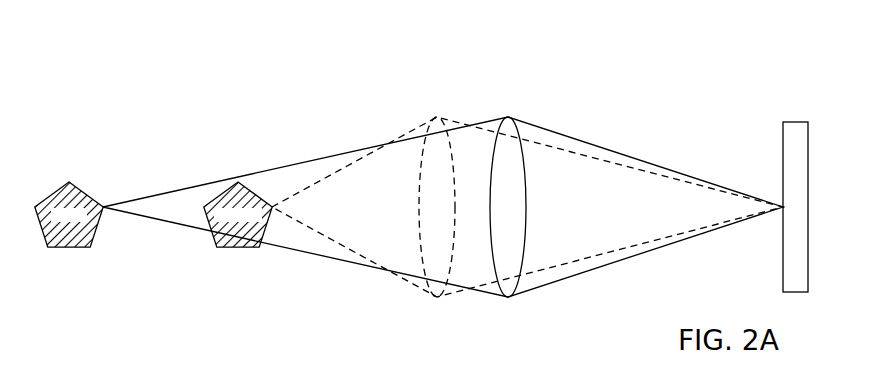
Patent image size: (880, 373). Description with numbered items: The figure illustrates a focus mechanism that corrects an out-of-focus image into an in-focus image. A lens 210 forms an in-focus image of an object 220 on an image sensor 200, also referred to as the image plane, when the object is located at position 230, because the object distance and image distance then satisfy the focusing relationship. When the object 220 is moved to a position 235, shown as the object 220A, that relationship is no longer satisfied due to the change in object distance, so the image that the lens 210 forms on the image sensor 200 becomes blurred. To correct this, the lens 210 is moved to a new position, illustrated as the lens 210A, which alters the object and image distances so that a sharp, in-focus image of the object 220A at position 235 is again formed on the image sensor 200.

The image sensor 200 is at (783, 142).
The lens 210 is at (493, 137).
The lens at new position 210A is at (418, 137).
The object 220 is at (409, 207).
The object at moved position 220A is at (493, 207).
The position 230 is at (70, 178).
The position 235 is at (228, 248).